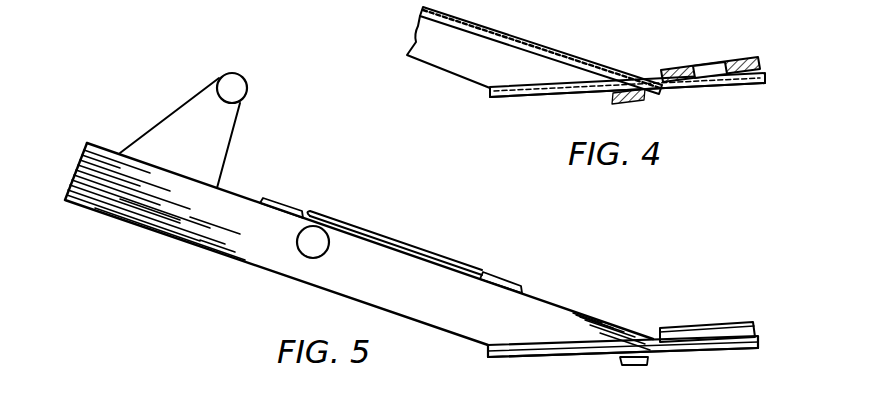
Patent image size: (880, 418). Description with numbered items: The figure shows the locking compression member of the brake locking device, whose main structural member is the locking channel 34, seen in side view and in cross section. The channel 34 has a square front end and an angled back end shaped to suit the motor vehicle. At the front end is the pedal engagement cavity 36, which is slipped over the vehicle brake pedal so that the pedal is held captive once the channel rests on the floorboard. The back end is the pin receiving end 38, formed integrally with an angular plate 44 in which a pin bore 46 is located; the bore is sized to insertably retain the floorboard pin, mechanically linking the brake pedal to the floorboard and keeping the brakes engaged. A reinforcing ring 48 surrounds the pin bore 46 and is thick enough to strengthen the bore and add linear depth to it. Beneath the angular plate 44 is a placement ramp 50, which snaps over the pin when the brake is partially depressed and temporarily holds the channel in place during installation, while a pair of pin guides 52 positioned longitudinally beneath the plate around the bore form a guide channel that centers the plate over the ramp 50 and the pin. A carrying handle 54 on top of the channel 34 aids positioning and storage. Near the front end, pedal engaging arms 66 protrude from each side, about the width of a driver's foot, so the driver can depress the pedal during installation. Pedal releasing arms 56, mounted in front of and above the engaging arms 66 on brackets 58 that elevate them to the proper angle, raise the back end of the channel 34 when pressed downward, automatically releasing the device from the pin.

In FIG. 4, the locking channel 34 is at (567, 55).
In FIG. 5, the locking channel 34 is at (215, 252).
In FIG. 5, the pedal engagement cavity 36 is at (80, 156).
In FIG. 5, the pin receiving end 38 is at (655, 336).
In FIG. 4, the angular plate 44 is at (768, 75).
In FIG. 5, the angular plate 44 is at (731, 348).
In FIG. 4, the pin bore 46 is at (705, 70).
In FIG. 4, the reinforcing ring 48 is at (745, 60).
In FIG. 5, the reinforcing ring 48 is at (735, 322).
In FIG. 4, the placement ramp 50 is at (640, 100).
In FIG. 5, the placement ramp 50 is at (643, 365).
In FIG. 4, the pin guides 52 is at (740, 85).
In FIG. 5, the pin guides 52 is at (585, 357).
In FIG. 5, the carrying handle 54 is at (427, 245).
In FIG. 5, the pedal releasing arms 56 is at (247, 88).
In FIG. 5, the brackets 58 is at (177, 110).
In FIG. 5, the pedal engaging arms 66 is at (323, 218).